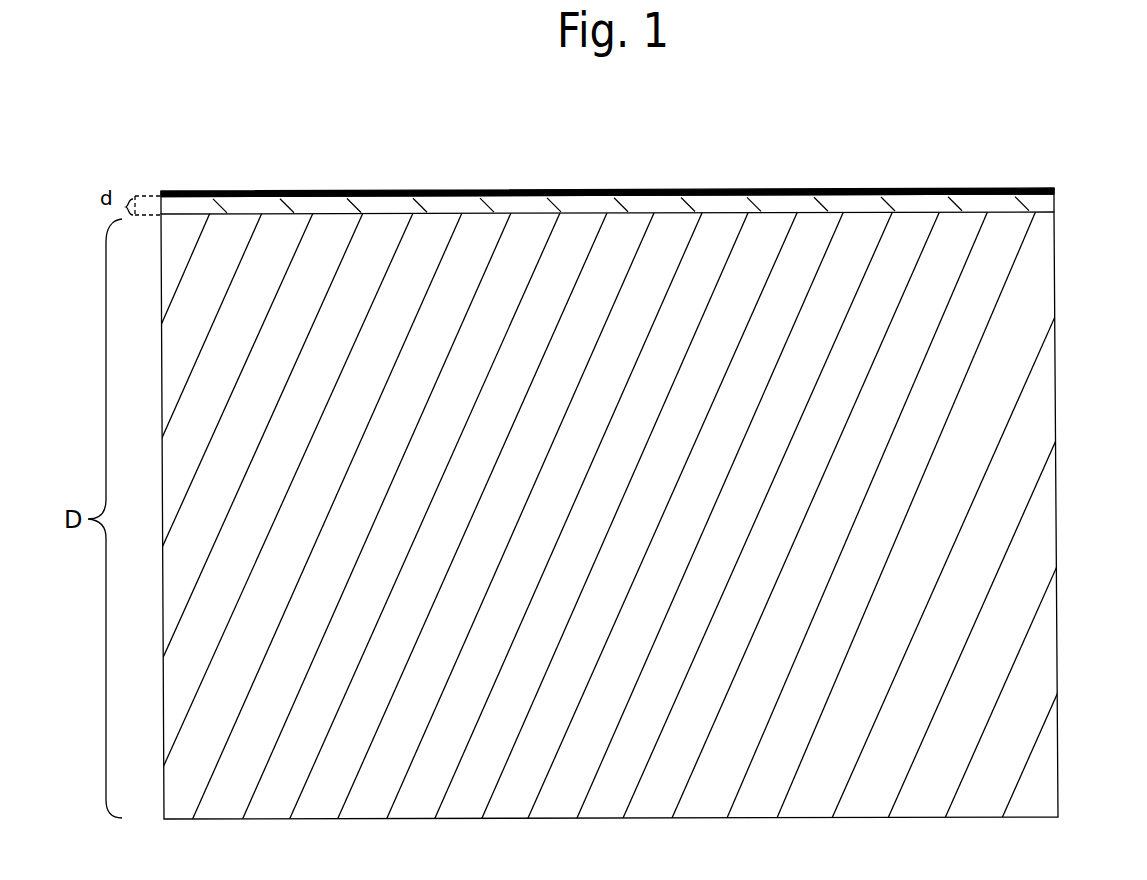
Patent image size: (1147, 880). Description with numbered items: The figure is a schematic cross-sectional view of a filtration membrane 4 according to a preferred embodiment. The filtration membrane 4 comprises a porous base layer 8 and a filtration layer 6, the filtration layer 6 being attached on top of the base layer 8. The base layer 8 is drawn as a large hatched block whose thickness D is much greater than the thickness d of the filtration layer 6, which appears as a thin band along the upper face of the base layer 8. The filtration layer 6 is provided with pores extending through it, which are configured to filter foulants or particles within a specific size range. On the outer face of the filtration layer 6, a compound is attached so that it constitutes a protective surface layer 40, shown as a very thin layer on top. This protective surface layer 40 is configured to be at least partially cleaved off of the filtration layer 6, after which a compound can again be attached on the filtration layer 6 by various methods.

The filtration membrane 4 is at (1090, 305).
The filtration layer 6 is at (340, 200).
The porous base layer 8 is at (660, 255).
The protective surface layer 40 is at (468, 190).